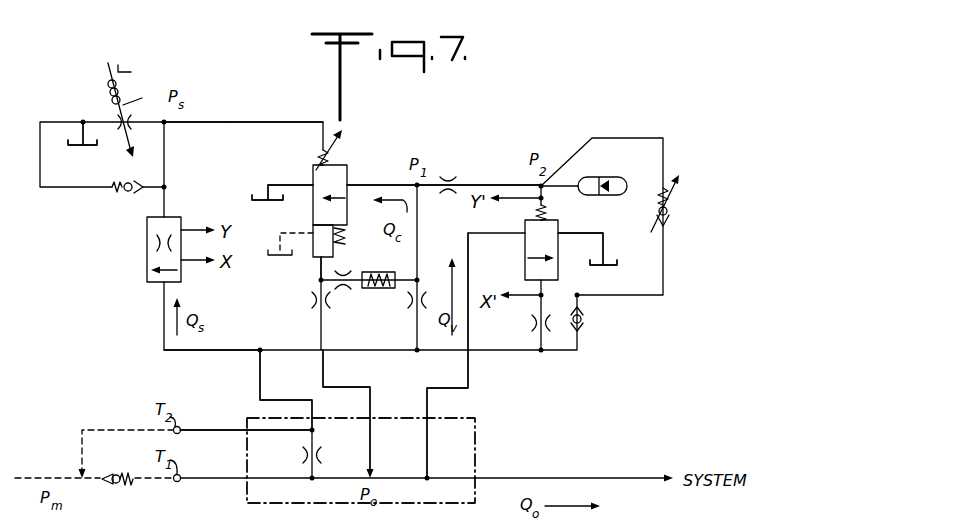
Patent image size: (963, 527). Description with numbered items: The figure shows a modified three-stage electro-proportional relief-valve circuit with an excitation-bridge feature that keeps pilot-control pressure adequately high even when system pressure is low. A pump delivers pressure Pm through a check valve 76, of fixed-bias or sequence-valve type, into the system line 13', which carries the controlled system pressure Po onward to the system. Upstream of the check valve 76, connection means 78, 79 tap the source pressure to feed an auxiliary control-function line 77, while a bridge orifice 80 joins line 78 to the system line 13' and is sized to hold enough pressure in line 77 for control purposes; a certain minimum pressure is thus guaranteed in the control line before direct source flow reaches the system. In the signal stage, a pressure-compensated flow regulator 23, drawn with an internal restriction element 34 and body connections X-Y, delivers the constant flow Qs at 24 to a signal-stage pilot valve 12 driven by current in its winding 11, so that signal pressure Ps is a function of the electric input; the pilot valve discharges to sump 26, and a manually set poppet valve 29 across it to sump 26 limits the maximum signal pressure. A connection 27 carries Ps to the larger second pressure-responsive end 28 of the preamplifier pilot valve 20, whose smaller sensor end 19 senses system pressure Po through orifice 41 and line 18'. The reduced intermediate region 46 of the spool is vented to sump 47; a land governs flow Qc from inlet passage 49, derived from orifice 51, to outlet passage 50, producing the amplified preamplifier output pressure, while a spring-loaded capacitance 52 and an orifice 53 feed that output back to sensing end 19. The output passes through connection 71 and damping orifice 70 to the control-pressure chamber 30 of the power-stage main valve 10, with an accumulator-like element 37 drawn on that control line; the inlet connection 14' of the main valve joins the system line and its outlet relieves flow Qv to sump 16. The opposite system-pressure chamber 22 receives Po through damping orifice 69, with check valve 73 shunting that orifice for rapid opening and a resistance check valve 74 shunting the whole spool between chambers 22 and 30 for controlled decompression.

The winding 11 is at (97, 522).
The signal-stage pilot valve 12 is at (152, 102).
The flow regulator outlet to pilot-valve inlet 24 is at (166, 124).
The sump 26 is at (78, 152).
The connection 27 is at (229, 122).
The second pressure-responsive end 28 is at (320, 158).
The poppet valve 29 is at (118, 202).
The pressure-compensated flow regulator 23 is at (138, 233).
The variable orifice 34 is at (144, 249).
The preamplifier pilot valve 20 is at (357, 145).
The outlet passage 50 is at (277, 183).
The sump 47 is at (252, 205).
The reduced intermediate region 46 is at (313, 250).
The first pressure-responsive end 19 is at (312, 236).
The orifice 53 is at (346, 271).
The spring-loaded capacitance 52 is at (400, 272).
The orifice 41 is at (318, 303).
The orifice 51 is at (412, 303).
The inlet passage 49 is at (368, 183).
The damping orifice 70 is at (450, 178).
The connection 71 is at (434, 190).
The accumulator 37 is at (623, 176).
The resistance check valve 74 is at (675, 216).
The control-pressure chamber 30 is at (525, 220).
The main valve 10 is at (565, 218).
The system-pressure chamber 22 is at (557, 279).
The sump 16 is at (612, 271).
The damping orifice 69 is at (537, 323).
The check valve 73 is at (584, 325).
The auxiliary line 77 is at (169, 352).
The connection means 78 is at (258, 355).
The line 18' is at (322, 410).
The inlet connection 14' is at (443, 355).
The connection means 79 is at (197, 428).
The check valve 76 is at (120, 470).
The orifice 80 is at (305, 455).
The system line 13' is at (361, 460).